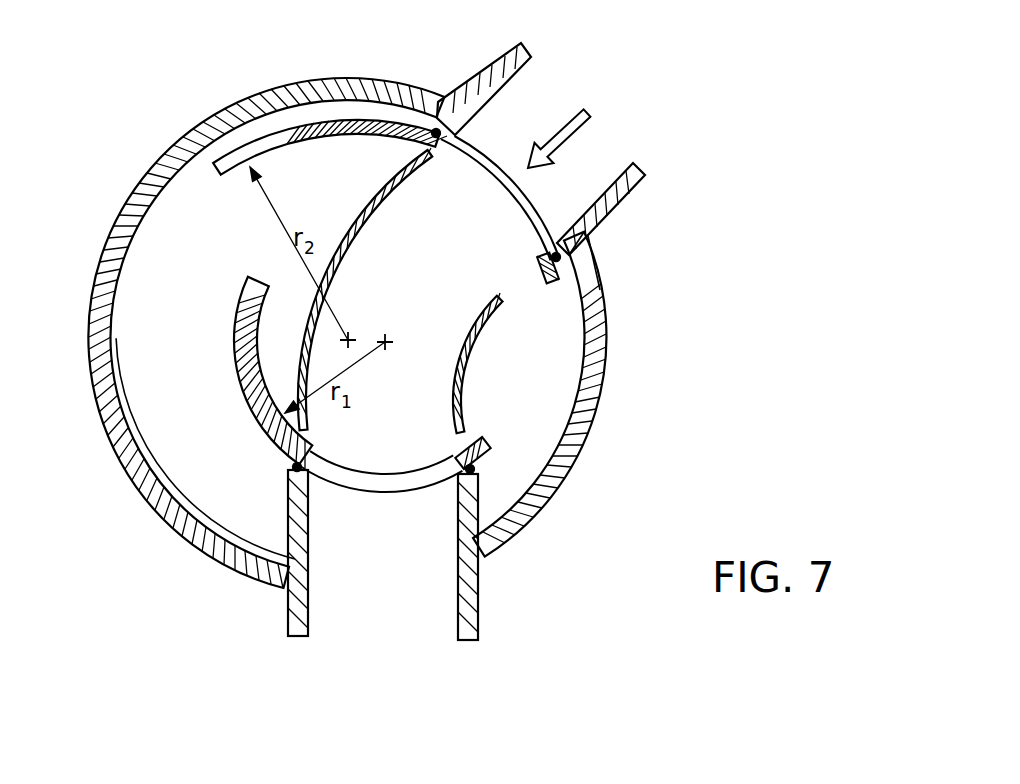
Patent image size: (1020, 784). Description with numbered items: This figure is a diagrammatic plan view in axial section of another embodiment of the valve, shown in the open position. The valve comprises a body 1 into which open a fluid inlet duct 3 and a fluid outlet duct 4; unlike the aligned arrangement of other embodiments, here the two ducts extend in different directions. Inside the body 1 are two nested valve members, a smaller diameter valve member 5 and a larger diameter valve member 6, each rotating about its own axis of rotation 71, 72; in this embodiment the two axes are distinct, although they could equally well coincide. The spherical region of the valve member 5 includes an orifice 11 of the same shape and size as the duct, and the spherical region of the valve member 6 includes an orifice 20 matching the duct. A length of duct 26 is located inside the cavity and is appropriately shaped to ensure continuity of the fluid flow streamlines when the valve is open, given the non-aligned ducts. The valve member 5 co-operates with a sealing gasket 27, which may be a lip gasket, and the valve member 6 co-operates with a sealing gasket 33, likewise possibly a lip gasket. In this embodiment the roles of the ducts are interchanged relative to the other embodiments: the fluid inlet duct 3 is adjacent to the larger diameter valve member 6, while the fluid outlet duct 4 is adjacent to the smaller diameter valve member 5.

The body 1 is at (597, 352).
The upstream fluid inlet duct 3 is at (624, 197).
The downstream fluid outlet duct 4 is at (480, 612).
The valve member 5 is at (236, 350).
The valve member 6 is at (343, 140).
The orifice 11 is at (386, 487).
The orifice 20 is at (492, 190).
The length of duct 26 is at (375, 205).
The sealing gasket 27 is at (480, 460).
The sealing gasket 33 is at (572, 282).
The axis of rotation 71 is at (388, 345).
The axis of rotation 72 is at (352, 333).